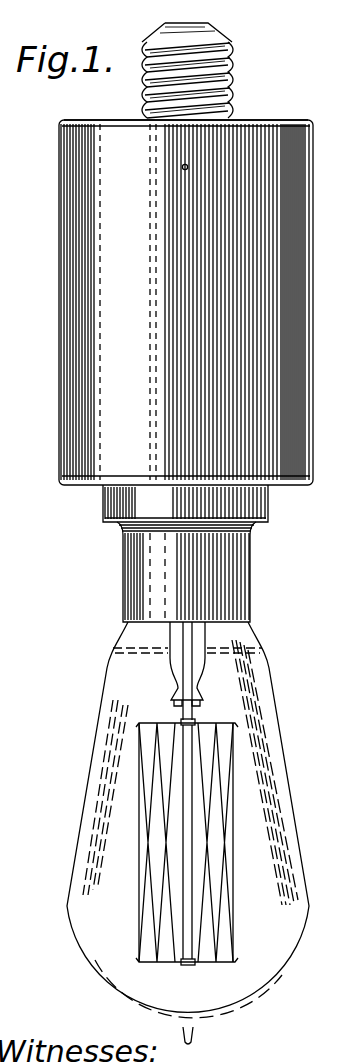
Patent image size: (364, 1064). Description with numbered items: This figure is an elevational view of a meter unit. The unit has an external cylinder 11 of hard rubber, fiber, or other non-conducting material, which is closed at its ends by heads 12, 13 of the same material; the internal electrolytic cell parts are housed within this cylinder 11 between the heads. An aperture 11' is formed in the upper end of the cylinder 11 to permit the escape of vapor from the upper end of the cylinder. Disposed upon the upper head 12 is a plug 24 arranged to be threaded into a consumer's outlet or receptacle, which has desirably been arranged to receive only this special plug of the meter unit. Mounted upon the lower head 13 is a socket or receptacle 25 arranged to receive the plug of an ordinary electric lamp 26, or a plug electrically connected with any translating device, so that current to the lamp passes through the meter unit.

The plug 24 is at (230, 36).
The head 12 is at (304, 120).
The cylinder 11 is at (211, 302).
The aperture 11' is at (154, 174).
The head 13 is at (290, 483).
The socket or receptacle 25 is at (248, 537).
The electric lamp 26 is at (273, 775).